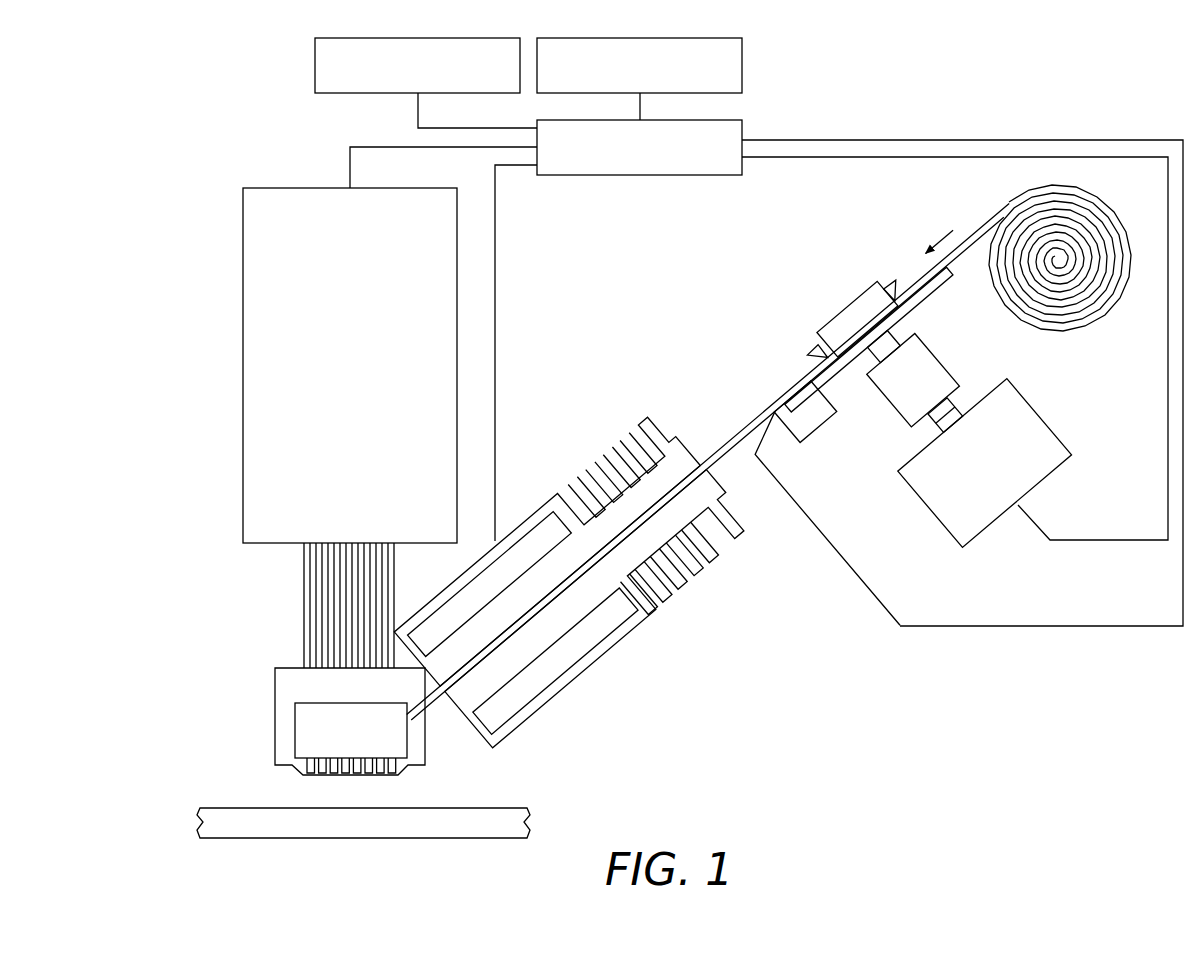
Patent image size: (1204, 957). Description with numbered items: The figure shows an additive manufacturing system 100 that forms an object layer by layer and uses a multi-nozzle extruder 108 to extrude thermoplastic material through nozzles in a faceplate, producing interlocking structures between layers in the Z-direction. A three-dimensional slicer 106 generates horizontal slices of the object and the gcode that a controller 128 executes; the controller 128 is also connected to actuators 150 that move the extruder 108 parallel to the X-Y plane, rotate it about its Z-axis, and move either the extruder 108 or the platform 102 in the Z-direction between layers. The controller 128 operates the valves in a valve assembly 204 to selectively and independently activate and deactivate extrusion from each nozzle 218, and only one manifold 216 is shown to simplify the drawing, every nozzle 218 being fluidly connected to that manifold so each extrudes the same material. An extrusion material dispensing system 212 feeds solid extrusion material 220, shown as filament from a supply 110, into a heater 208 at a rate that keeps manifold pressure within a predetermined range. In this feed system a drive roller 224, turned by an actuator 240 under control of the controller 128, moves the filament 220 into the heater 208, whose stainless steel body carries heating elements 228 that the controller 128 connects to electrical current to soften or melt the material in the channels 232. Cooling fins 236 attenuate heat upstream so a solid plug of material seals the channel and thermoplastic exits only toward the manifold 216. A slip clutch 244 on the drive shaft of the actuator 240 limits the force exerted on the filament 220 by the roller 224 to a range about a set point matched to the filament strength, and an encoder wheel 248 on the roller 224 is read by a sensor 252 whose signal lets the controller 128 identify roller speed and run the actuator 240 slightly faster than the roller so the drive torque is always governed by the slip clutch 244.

The additive manufacturing system 100 is at (272, 110).
The platform 102 is at (530, 822).
The 3D slicer 106 is at (315, 66).
The extruder 108 is at (273, 657).
The extrusion material supply 110 is at (1136, 190).
The controller 128 is at (640, 176).
The actuators 150 is at (742, 63).
The valve assembly 204 is at (298, 187).
The heater 208 is at (572, 682).
The extrusion material dispensing system 212 is at (918, 518).
The manifold 216 is at (408, 743).
The nozzle 218 is at (312, 778).
The extrusion material 220 is at (975, 228).
The drive roller 224 is at (850, 308).
The heating elements 228 is at (535, 520).
The channels 232 is at (483, 663).
The cooling fins 236 is at (647, 425).
The actuator 240 is at (1055, 436).
The slip clutch 244 is at (958, 382).
The encoder wheel 248 is at (840, 372).
The sensor 252 is at (810, 438).